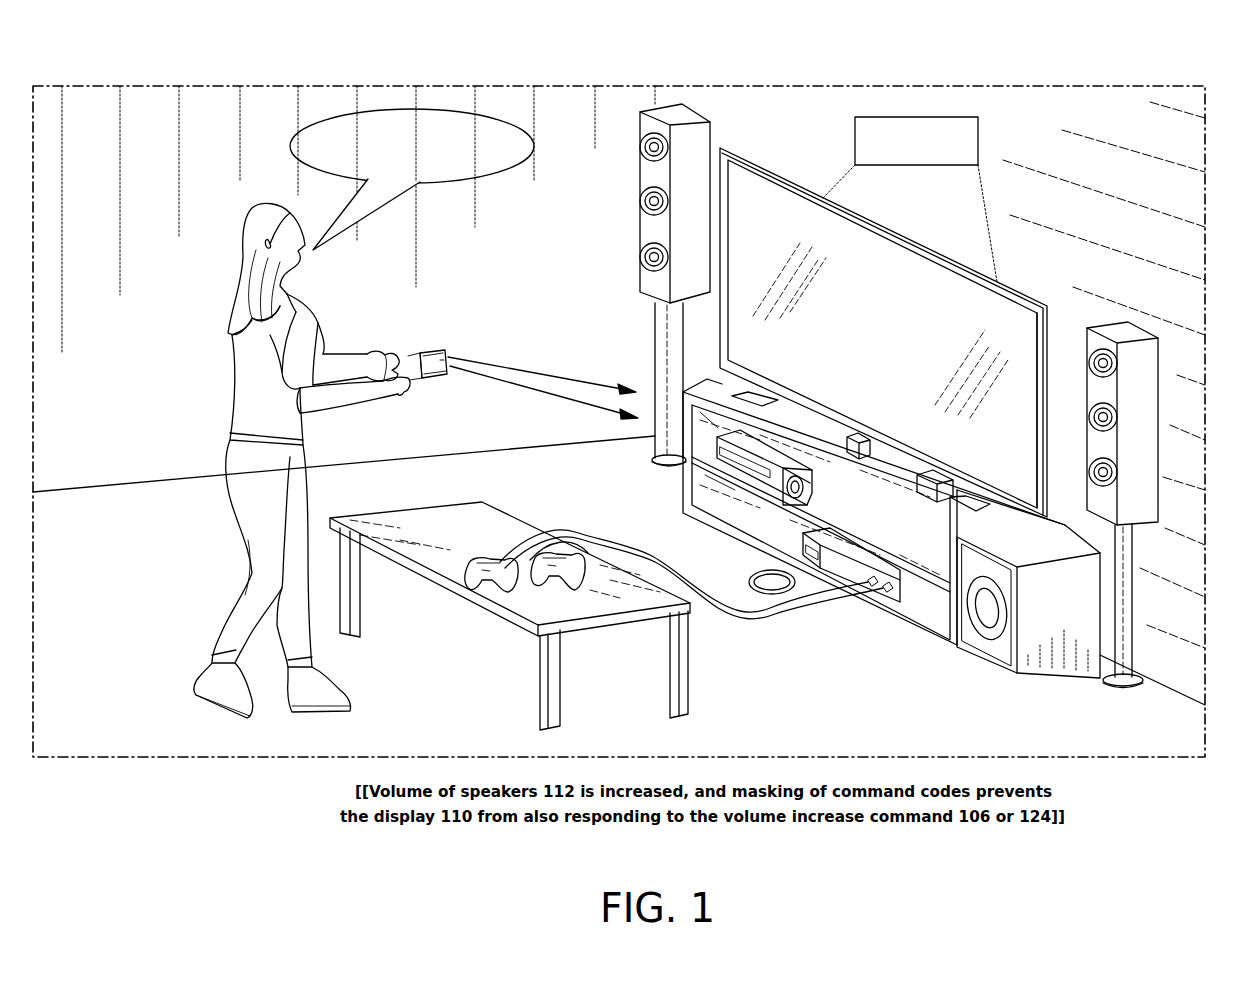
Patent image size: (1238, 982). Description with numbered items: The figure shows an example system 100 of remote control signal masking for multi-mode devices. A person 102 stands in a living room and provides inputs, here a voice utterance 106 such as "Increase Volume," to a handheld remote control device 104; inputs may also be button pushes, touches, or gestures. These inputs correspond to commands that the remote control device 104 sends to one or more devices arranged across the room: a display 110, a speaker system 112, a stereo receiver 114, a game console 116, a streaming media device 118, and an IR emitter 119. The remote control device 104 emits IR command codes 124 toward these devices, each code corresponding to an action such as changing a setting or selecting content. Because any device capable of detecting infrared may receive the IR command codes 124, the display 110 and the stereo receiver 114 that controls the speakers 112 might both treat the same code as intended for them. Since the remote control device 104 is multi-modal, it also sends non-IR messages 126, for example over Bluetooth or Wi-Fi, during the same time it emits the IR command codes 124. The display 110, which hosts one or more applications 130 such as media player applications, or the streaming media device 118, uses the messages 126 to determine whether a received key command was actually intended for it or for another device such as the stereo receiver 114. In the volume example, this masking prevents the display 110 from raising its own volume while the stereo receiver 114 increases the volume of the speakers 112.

The system 100 is at (1066, 24).
The person 102 is at (233, 403).
The remote control device 104 is at (425, 353).
The voice utterances 106 is at (506, 170).
The display 110 is at (918, 245).
The speaker system 112 is at (710, 143).
The stereo receiver 114 is at (845, 492).
The game console 116 is at (803, 546).
The streaming media device 118 is at (913, 486).
The IR emitter 119 is at (845, 448).
The IR command codes 124 is at (537, 373).
The messages 126 is at (533, 389).
The applications 130 is at (978, 148).